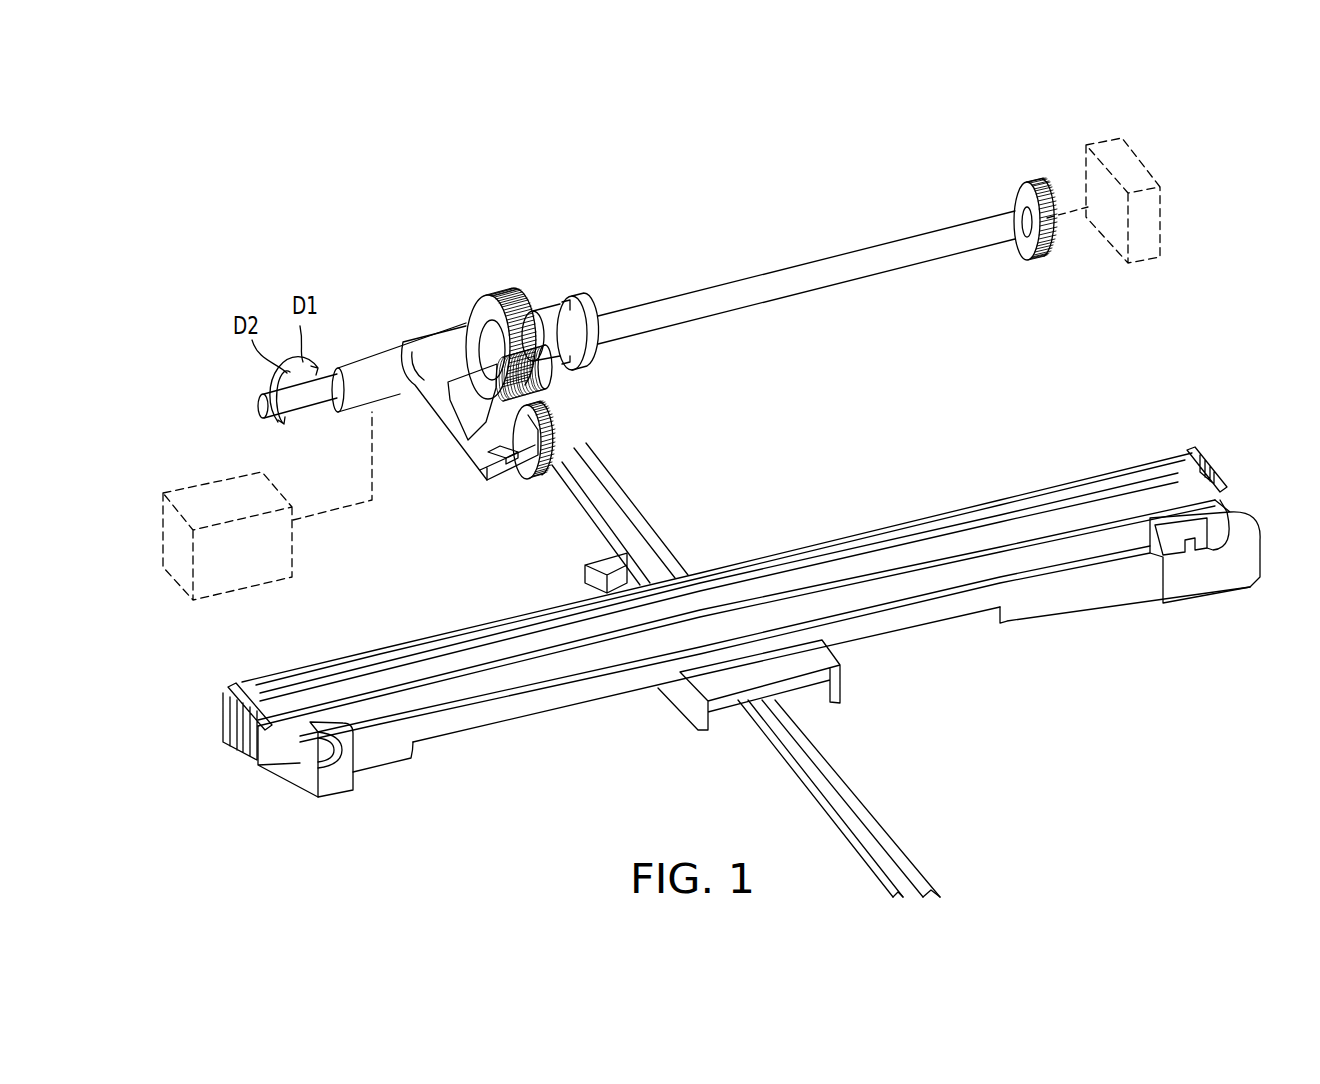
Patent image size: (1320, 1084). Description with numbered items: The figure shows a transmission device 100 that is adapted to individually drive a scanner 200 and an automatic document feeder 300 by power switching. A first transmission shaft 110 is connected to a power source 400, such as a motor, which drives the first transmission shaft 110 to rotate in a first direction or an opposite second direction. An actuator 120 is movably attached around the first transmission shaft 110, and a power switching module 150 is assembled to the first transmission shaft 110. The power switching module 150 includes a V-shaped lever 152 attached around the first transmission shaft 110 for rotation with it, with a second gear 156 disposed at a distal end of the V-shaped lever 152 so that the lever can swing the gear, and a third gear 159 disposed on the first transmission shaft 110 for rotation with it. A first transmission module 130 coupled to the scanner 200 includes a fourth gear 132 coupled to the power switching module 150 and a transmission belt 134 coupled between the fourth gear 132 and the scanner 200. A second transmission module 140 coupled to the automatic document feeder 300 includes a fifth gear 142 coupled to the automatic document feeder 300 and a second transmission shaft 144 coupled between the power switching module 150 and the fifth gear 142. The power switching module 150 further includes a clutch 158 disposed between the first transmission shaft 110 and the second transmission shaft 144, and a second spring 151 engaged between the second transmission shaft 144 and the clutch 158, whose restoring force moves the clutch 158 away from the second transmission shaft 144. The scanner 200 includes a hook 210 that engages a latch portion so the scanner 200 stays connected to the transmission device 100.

The transmission device 100 is at (392, 133).
The first transmission shaft 110 is at (261, 410).
The actuator 120 is at (427, 343).
The first transmission module 130 is at (436, 492).
The fourth gear 132 is at (533, 473).
The transmission belt 134 is at (566, 512).
The second transmission module 140 is at (906, 181).
The fifth gear 142 is at (1013, 200).
The second transmission shaft 144 is at (818, 273).
The power switching module 150 is at (546, 216).
The second spring 151 is at (568, 363).
The V-shaped lever 152 is at (463, 317).
The second gear 156 is at (550, 408).
The clutch 158 is at (552, 320).
The third gear 159 is at (495, 292).
The scanner 200 is at (315, 785).
The hook 210 is at (585, 575).
The automatic document feeder (ADF) 300 is at (1147, 170).
The power source 400 is at (163, 518).